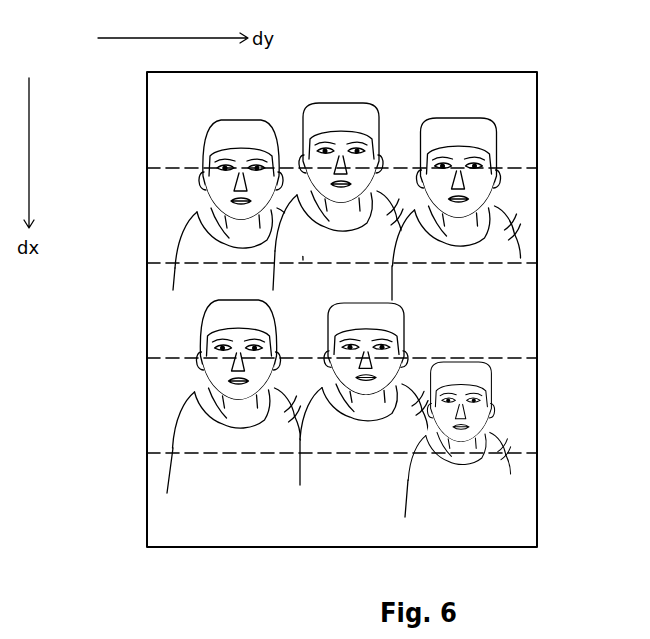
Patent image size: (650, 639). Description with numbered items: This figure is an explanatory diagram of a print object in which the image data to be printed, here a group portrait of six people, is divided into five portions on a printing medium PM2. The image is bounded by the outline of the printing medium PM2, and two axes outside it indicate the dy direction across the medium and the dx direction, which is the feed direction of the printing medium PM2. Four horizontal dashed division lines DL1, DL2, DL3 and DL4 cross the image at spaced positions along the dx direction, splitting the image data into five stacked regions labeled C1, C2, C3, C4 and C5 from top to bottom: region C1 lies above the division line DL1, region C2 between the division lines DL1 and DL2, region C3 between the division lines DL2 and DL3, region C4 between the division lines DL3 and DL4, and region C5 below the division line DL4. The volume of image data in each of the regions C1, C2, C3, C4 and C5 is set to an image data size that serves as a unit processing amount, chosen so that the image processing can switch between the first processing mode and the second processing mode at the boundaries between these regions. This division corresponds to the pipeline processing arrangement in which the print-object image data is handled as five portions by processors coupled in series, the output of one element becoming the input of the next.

The printing medium PM2 is at (537, 178).
The division line DL1 is at (525, 166).
The division line DL2 is at (525, 262).
The division line DL3 is at (527, 357).
The division line DL4 is at (527, 452).
The region C1 is at (165, 125).
The region C2 is at (165, 220).
The region C3 is at (165, 315).
The region C4 is at (165, 410).
The region C5 is at (165, 505).